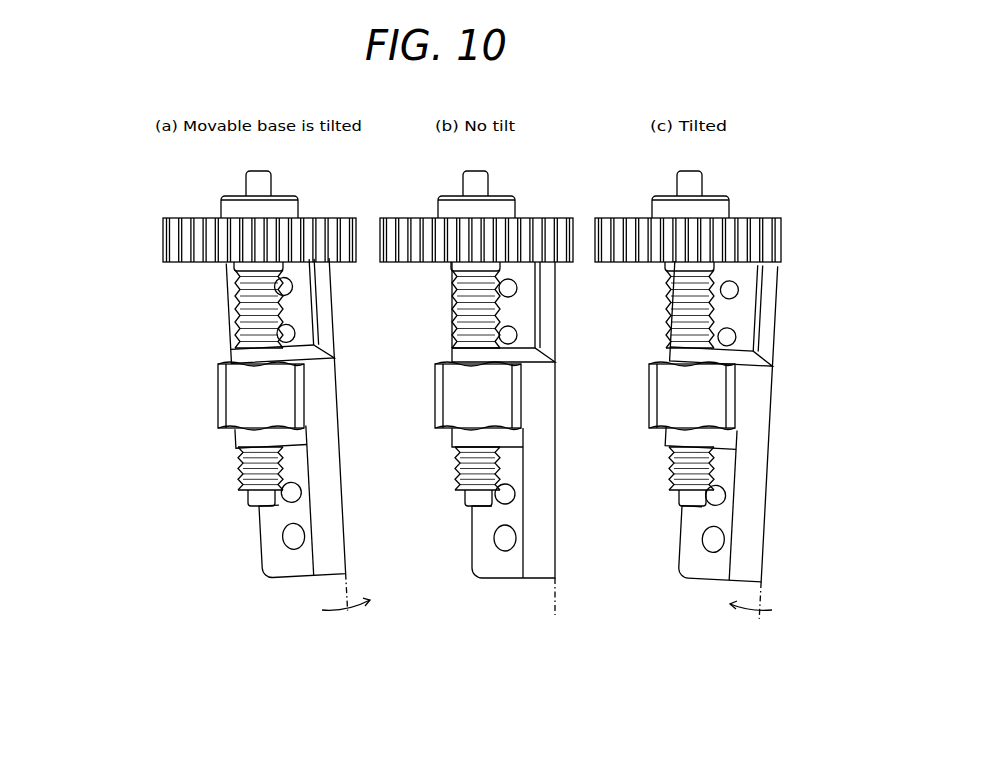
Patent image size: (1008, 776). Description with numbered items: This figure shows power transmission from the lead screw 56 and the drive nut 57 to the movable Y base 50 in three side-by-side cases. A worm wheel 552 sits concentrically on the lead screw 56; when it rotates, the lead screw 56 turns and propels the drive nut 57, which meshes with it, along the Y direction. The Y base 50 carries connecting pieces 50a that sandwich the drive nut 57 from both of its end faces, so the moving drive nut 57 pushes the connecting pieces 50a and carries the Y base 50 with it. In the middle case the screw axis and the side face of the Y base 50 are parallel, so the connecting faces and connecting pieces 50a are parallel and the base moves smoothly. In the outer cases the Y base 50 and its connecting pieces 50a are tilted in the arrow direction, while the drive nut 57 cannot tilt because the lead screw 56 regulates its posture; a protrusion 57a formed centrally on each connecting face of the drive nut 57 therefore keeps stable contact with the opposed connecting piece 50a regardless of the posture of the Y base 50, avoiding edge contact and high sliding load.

The gear 552 is at (224, 240).
The lead screw 56 is at (203, 305).
The drive nut 57 is at (218, 396).
The protrusion 57a is at (220, 394).
The connecting pieces 50a is at (315, 390).
The Y base 50 is at (311, 437).